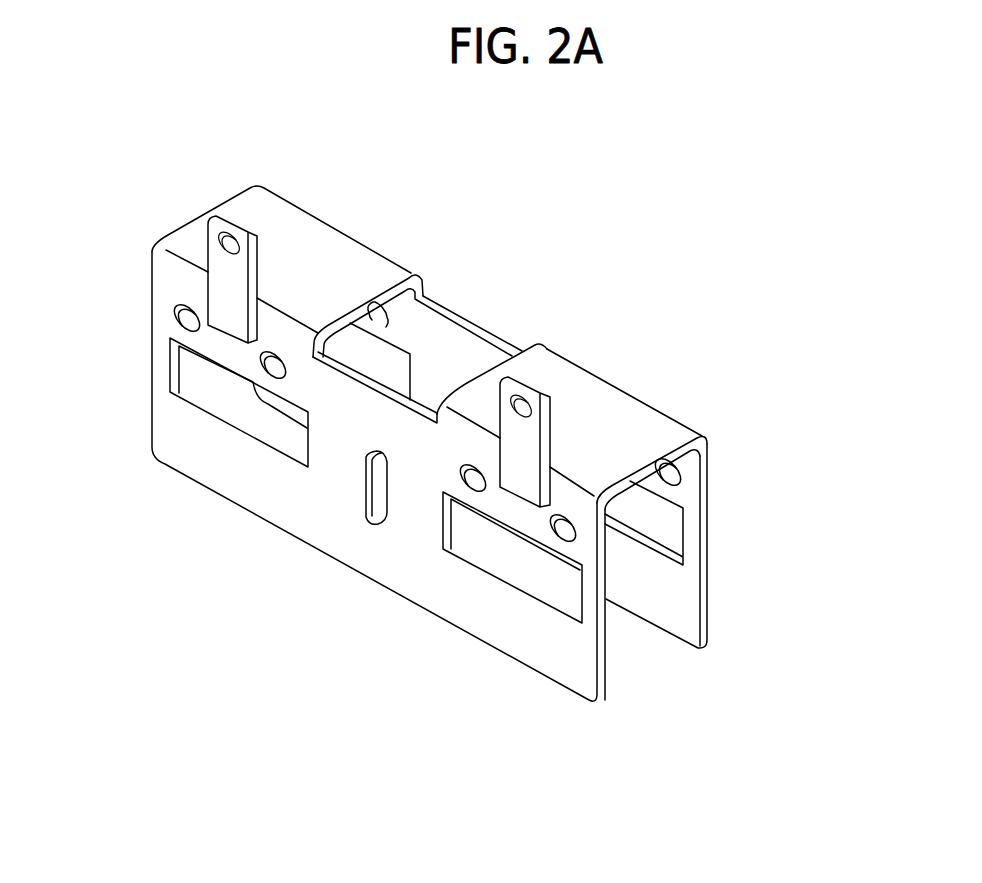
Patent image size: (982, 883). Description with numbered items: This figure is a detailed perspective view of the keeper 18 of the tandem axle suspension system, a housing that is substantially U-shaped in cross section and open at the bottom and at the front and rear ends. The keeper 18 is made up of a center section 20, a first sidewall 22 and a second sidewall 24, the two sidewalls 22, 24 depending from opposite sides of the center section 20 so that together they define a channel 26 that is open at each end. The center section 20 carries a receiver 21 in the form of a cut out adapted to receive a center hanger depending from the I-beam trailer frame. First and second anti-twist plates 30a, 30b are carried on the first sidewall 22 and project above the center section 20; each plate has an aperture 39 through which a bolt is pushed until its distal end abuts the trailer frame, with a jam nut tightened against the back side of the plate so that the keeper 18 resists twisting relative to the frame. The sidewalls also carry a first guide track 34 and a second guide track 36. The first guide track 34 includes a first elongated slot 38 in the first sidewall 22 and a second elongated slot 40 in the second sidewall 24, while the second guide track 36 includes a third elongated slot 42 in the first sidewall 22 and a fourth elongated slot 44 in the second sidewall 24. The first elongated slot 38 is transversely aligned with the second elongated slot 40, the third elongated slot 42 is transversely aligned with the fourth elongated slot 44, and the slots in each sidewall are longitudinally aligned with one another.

The keeper 18 is at (609, 281).
The center section 20 is at (645, 433).
The receiver 21 is at (494, 333).
The first sidewall 22 is at (400, 575).
The second sidewall 24 is at (708, 605).
The channel 26 is at (670, 584).
The first anti-twist plate 30a is at (258, 260).
The second anti-twist plate 30b is at (518, 475).
The first guide track 34 is at (283, 364).
The second guide track 36 is at (635, 607).
The first elongated slot 38 is at (228, 425).
The apertures 39 is at (221, 245).
The second elongated slot 40 is at (388, 343).
The third elongated slot 42 is at (550, 603).
The fourth elongated slot 44 is at (684, 530).